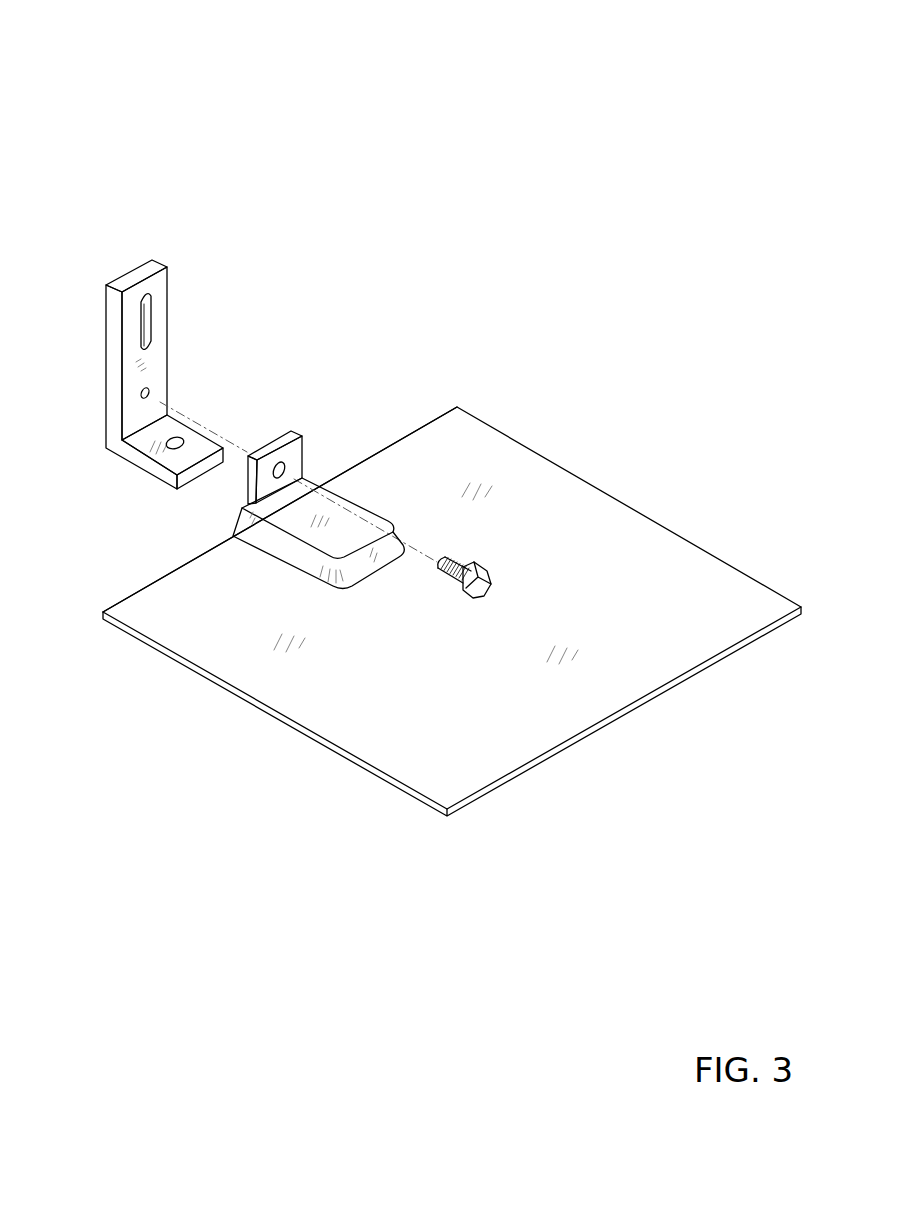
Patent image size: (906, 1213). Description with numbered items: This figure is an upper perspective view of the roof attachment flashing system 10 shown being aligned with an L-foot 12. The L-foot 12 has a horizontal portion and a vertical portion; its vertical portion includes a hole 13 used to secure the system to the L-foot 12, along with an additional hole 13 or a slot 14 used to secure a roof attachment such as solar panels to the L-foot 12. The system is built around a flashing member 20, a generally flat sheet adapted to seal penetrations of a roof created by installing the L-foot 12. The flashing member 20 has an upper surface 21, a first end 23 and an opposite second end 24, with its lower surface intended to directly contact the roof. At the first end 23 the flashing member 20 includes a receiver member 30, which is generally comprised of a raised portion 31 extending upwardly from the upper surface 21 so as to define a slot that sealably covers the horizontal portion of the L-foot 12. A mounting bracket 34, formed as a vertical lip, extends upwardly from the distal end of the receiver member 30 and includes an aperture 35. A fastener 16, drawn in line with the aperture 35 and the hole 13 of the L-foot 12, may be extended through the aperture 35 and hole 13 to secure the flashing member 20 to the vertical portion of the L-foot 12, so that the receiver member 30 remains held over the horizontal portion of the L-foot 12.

The roof attachment flashing system 10 is at (684, 98).
The L-foot 12 is at (167, 367).
The hole 13 is at (141, 394).
The slot 14 is at (154, 323).
The fastener 16 is at (467, 563).
The flashing member 20 is at (636, 500).
The upper surface 21 is at (668, 600).
The first end 23 is at (395, 441).
The second end 24 is at (625, 715).
The receiver member 30 is at (341, 546).
The raised portion 31 is at (277, 540).
The mounting bracket 34 is at (285, 430).
The aperture 35 is at (273, 468).